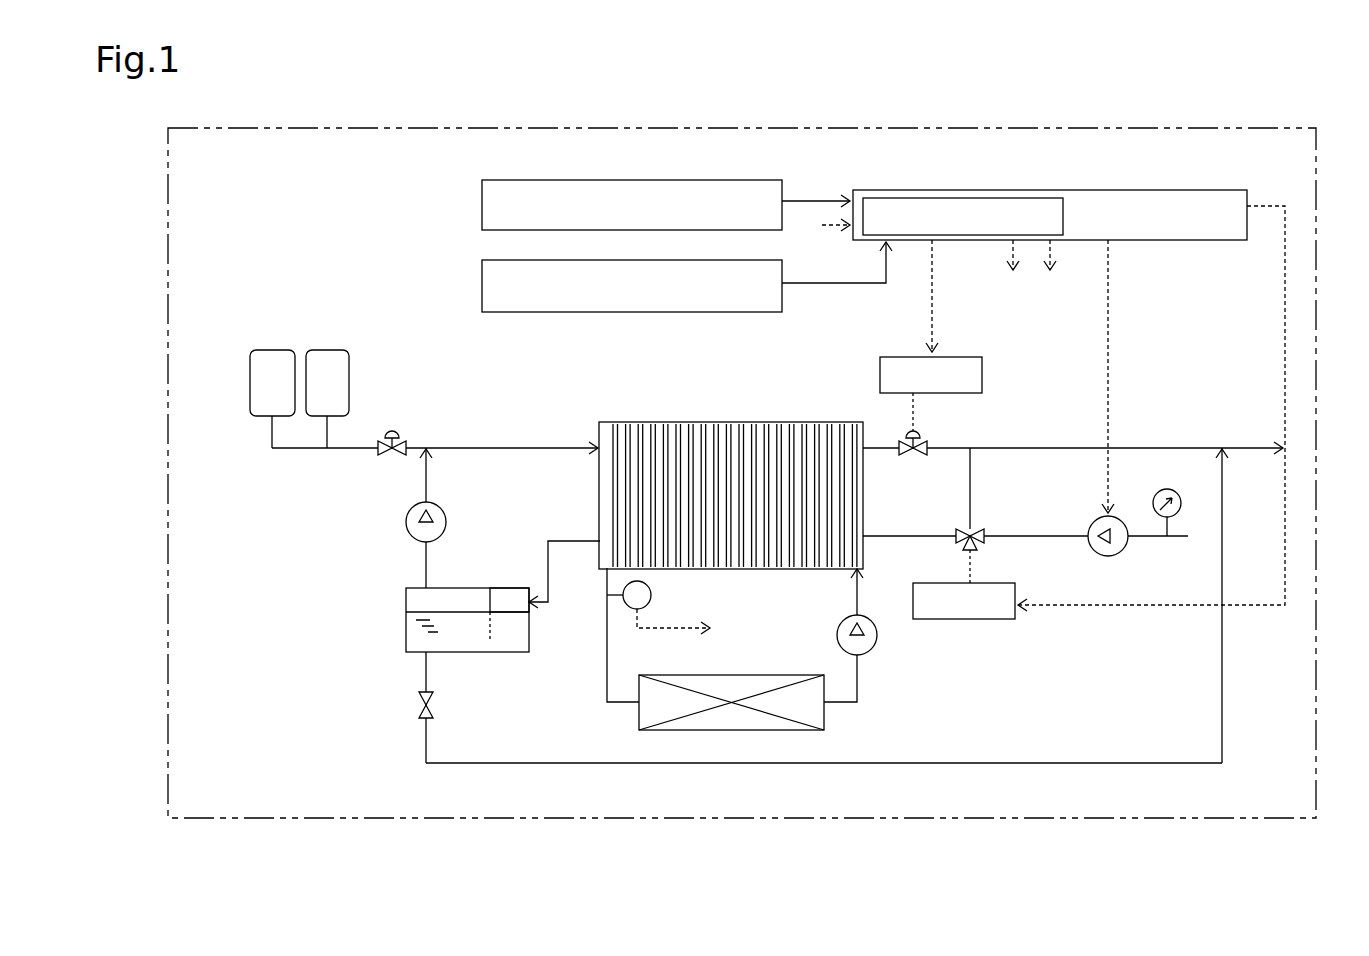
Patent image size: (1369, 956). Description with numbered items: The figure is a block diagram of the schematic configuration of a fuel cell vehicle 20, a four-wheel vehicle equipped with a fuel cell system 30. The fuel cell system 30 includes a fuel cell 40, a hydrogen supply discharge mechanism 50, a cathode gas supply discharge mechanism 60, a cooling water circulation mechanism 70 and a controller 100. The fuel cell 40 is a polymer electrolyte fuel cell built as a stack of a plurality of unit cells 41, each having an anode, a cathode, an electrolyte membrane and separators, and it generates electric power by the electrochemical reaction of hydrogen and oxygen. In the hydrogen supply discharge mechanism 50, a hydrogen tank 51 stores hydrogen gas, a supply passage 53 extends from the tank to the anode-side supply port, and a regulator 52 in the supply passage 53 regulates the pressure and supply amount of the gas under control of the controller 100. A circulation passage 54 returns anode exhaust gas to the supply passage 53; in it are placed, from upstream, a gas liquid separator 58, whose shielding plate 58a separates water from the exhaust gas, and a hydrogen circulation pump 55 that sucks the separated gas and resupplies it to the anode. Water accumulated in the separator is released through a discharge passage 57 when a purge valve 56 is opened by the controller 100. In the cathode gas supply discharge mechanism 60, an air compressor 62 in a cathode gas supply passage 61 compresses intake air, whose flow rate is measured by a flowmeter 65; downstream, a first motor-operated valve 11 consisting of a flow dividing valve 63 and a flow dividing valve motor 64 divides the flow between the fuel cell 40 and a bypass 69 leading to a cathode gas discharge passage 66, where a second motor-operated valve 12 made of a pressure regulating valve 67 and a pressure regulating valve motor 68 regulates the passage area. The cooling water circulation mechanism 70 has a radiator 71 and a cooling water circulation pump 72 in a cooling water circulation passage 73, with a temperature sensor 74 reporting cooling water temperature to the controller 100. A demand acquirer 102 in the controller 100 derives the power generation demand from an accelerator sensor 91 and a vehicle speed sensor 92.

The fuel cell vehicle 20 is at (1262, 100).
The fuel cell system 30 is at (463, 127).
The accelerator sensor 91 is at (482, 204).
The vehicle speed sensor 92 is at (482, 284).
The controller 100 is at (1128, 190).
The demand acquirer 102 is at (963, 198).
The hydrogen supply discharge mechanism 50 is at (318, 599).
The hydrogen tank 51 is at (250, 378).
The regulator 52 is at (392, 460).
The supply passage 53 is at (484, 447).
The circulation passage 54 is at (566, 540).
The hydrogen circulation pump 55 is at (445, 516).
The purge valve 56 is at (437, 702).
The discharge passage 57 is at (545, 762).
The gas liquid separator 58 is at (406, 600).
The shielding plate 58a is at (500, 580).
The fuel cell 40 is at (731, 459).
The unit cells 41 is at (712, 421).
The cathode gas supply discharge mechanism 60 is at (1201, 400).
The cathode gas supply passage 61 is at (1150, 537).
The air compressor 62 is at (1094, 520).
The flow dividing valve 63 is at (984, 544).
The flow dividing valve motor 64 is at (1015, 586).
The flowmeter 65 is at (1167, 489).
The cathode gas discharge passage 66 is at (1160, 446).
The pressure regulating valve 67 is at (922, 434).
The pressure regulating valve motor 68 is at (982, 375).
The bypass 69 is at (970, 468).
The first motor-operated valve 11 is at (1056, 548).
The second motor-operated valve 12 is at (1021, 358).
The cooling water circulation mechanism 70 is at (889, 689).
The radiator 71 is at (824, 715).
The cooling water circulation pump 72 is at (837, 632).
The cooling water circulation passage 73 is at (607, 660).
The temperature sensor 74 is at (651, 595).